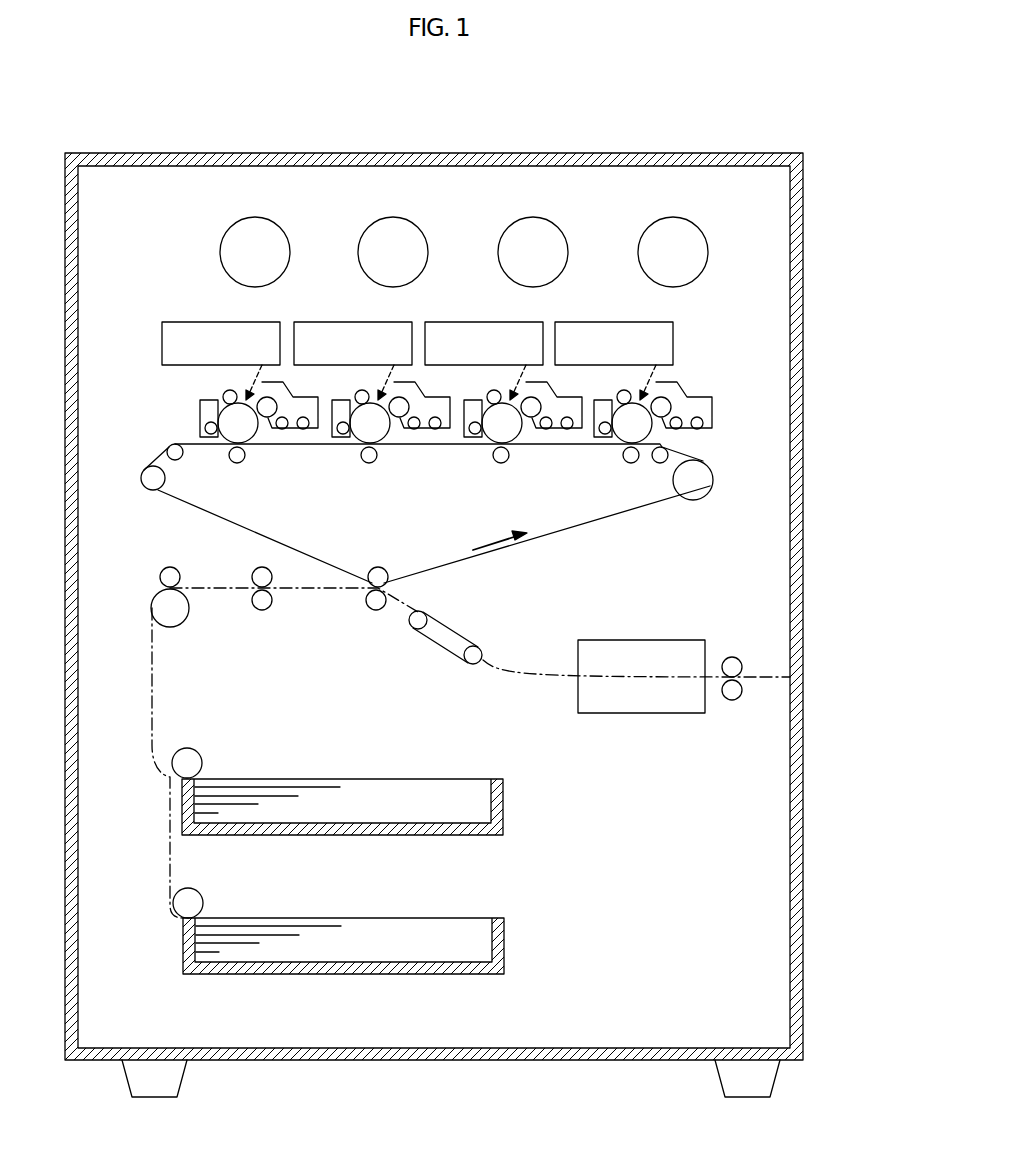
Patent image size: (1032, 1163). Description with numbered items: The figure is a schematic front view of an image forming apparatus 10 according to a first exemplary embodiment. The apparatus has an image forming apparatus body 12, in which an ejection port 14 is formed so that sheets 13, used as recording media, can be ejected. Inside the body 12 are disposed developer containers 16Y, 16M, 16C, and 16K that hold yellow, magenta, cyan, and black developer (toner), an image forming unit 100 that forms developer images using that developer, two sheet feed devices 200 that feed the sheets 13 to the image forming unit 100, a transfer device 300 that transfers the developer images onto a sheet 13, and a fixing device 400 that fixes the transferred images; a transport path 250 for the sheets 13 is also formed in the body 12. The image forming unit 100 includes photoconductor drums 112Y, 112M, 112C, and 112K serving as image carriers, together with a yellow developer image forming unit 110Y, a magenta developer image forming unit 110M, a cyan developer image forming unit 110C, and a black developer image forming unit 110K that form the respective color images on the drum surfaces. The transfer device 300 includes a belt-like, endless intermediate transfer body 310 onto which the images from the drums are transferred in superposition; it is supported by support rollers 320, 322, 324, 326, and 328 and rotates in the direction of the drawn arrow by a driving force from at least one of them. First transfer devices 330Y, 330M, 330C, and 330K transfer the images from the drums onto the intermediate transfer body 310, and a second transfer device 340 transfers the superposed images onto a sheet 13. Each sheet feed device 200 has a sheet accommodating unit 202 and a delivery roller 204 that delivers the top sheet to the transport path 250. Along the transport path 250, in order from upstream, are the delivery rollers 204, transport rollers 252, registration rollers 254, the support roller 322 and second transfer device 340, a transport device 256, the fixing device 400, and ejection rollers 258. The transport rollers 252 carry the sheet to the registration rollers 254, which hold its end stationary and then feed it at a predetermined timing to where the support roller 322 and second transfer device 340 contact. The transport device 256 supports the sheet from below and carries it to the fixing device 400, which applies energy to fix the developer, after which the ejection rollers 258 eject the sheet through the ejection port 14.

The image forming apparatus 10 is at (790, 118).
The image forming apparatus body 12 is at (805, 330).
The sheets 13 is at (357, 810).
The ejection port 14 is at (805, 668).
The developer container 16K is at (280, 224).
The developer container 16C is at (418, 224).
The developer container 16M is at (558, 224).
The developer container 16Y is at (696, 224).
The image forming unit 100 is at (200, 516).
The black developer image forming unit 110K is at (172, 321).
The cyan developer image forming unit 110C is at (304, 321).
The magenta developer image forming unit 110M is at (455, 321).
The yellow developer image forming unit 110Y is at (586, 321).
The photoconductor drum 112K is at (250, 432).
The photoconductor drum 112C is at (382, 432).
The photoconductor drum 112M is at (514, 432).
The photoconductor drum 112Y is at (624, 414).
The sheet feed device 200 is at (340, 777).
The sheet accommodating unit 202 is at (478, 838).
The delivery roller 204 is at (202, 762).
The transport path 250 is at (160, 716).
The transport rollers 252 is at (172, 628).
The registration rollers 254 is at (262, 612).
The transport device 256 is at (428, 640).
The ejection rollers 258 is at (742, 690).
The transfer device 300 is at (429, 493).
The intermediate transfer body 310 is at (285, 540).
The support roller 320 is at (150, 492).
The support roller 322 is at (385, 566).
The support roller 324 is at (700, 500).
The support roller 326 is at (668, 455).
The support roller 328 is at (172, 446).
The first transfer device 330K is at (237, 464).
The first transfer device 330C is at (369, 464).
The first transfer device 330M is at (501, 464).
The first transfer device 330Y is at (631, 464).
The second transfer device 340 is at (370, 608).
The fixing device 400 is at (644, 640).